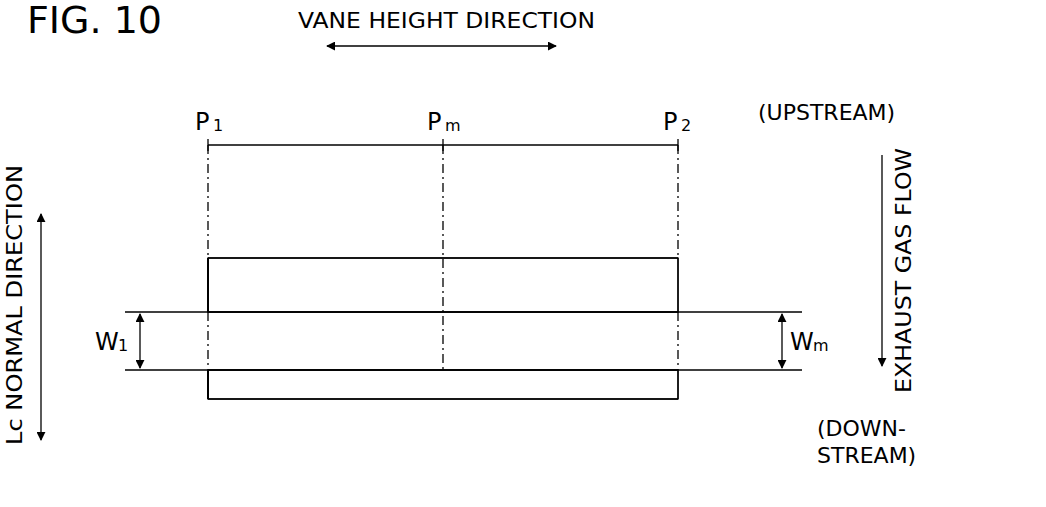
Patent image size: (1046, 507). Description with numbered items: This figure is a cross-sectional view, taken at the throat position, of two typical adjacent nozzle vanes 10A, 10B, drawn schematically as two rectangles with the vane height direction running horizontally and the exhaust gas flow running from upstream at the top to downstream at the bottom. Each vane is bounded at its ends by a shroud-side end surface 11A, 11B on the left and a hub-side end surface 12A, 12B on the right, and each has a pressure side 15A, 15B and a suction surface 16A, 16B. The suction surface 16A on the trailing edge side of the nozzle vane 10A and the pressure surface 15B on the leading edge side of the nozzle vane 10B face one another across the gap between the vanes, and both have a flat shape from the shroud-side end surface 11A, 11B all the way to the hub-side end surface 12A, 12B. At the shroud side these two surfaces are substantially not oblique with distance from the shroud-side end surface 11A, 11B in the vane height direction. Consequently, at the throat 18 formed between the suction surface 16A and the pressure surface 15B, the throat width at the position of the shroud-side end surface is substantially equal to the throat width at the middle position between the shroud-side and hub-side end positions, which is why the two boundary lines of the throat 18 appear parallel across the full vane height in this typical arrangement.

The nozzle vane 10A is at (527, 393).
The nozzle vane 10B is at (528, 264).
The shroud-side end surface 11A is at (208, 385).
The shroud-side end surface 11B is at (208, 290).
The hub-side end surface 12A is at (678, 385).
The hub-side end surface 12B is at (678, 282).
The pressure side 15A is at (357, 399).
The pressure surface 15B is at (330, 312).
The suction surface 16A is at (405, 370).
The suction surface 16B is at (355, 258).
The throat 18 is at (580, 353).